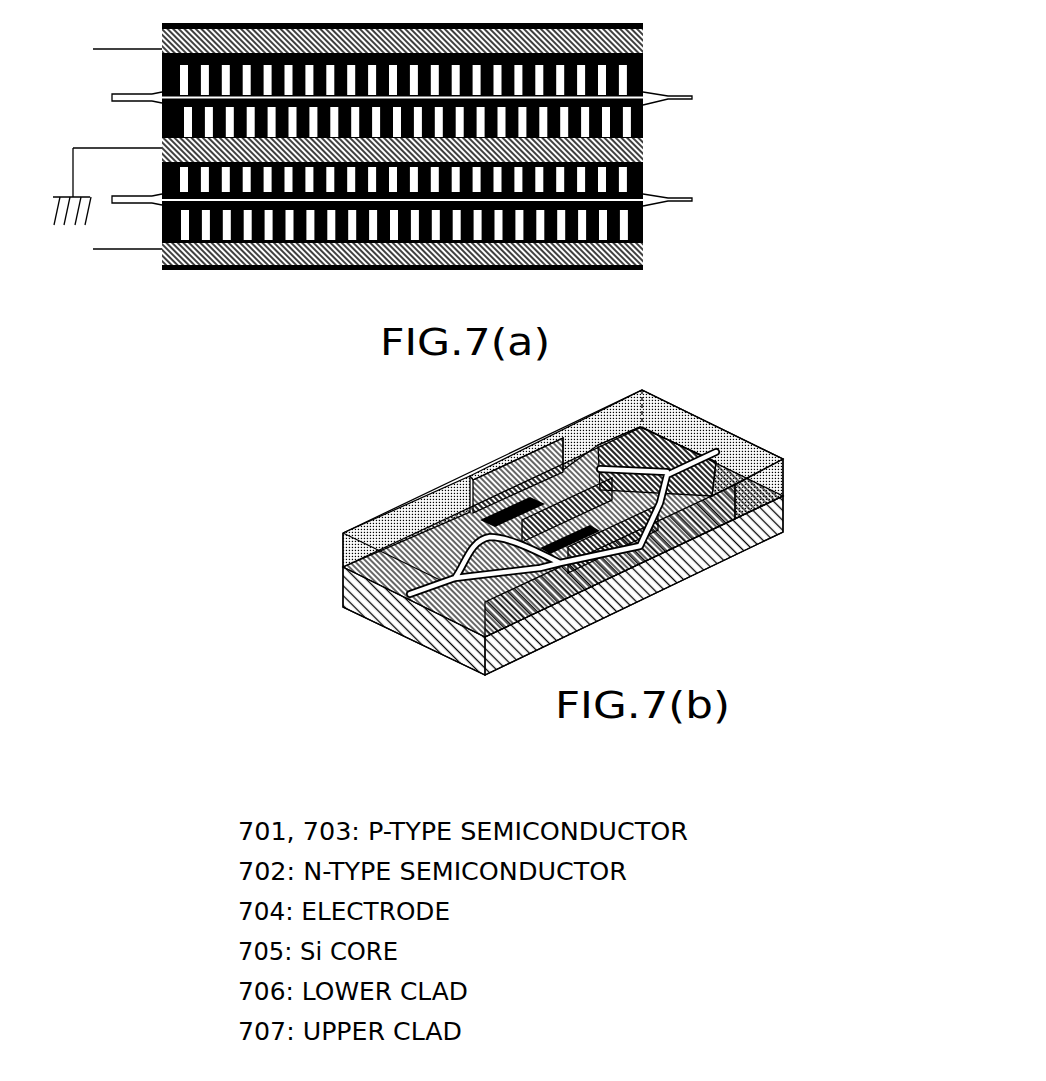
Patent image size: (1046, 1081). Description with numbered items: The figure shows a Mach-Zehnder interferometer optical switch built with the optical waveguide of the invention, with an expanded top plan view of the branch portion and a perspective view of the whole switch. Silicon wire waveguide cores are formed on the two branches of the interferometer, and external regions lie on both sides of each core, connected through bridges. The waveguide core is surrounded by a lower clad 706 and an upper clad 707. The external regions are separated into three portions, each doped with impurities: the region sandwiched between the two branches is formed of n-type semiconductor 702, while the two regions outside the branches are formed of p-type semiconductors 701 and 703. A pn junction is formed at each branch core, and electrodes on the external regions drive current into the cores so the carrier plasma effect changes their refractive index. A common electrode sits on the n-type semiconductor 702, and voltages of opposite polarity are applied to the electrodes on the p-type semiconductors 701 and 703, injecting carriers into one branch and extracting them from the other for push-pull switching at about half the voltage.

The p-type semiconductor 701 is at (668, 23).
The n-type semiconductor 702 is at (668, 100).
The p-type semiconductor 703 is at (668, 200).
The lower clad 706 is at (652, 578).
The upper clad 707 is at (786, 475).